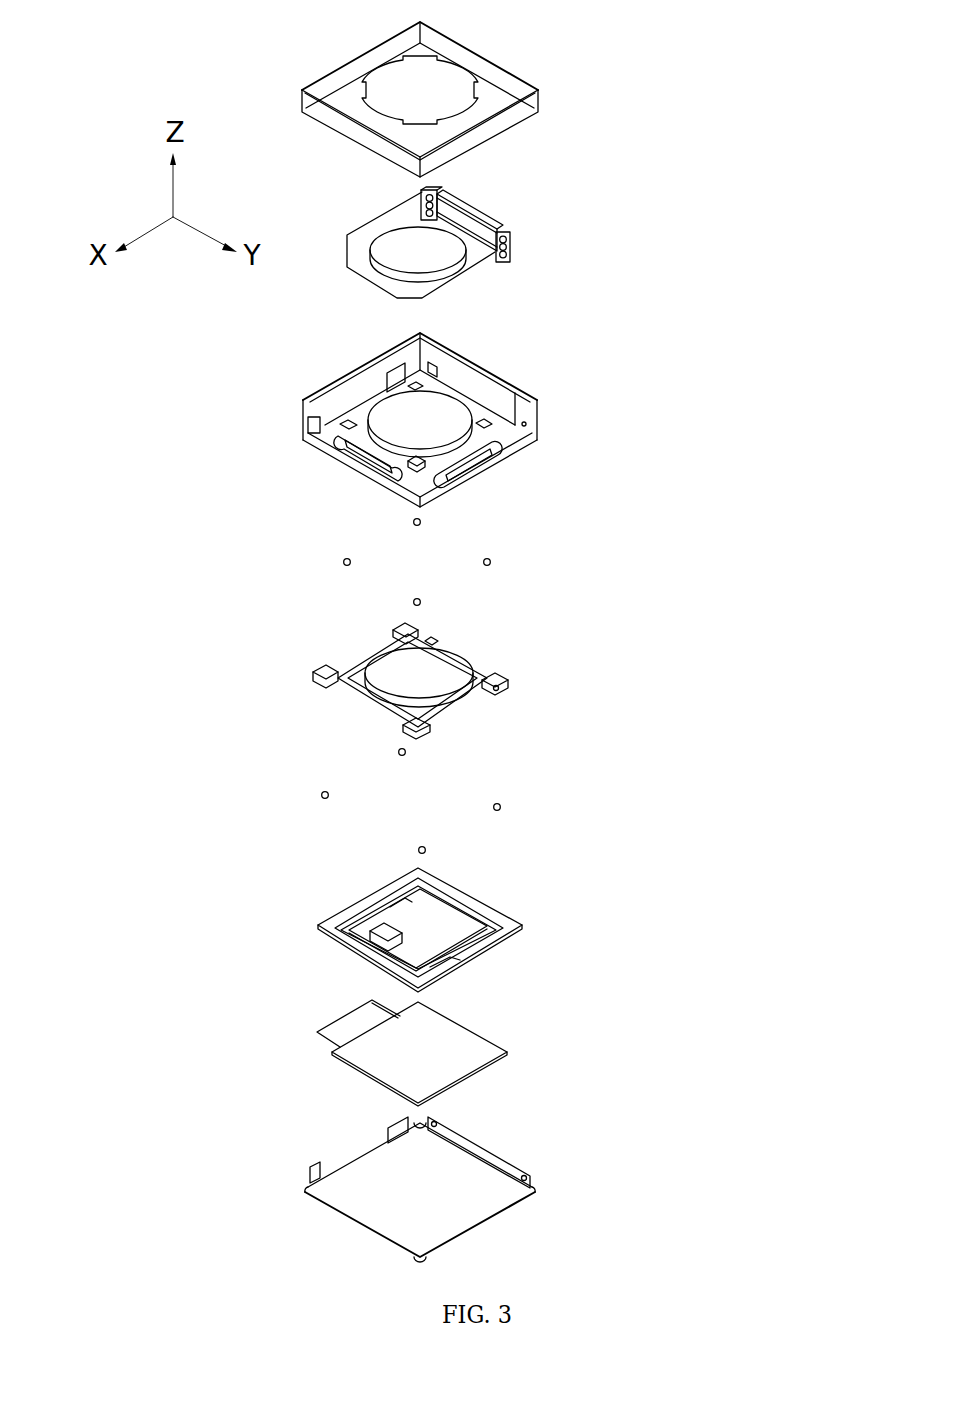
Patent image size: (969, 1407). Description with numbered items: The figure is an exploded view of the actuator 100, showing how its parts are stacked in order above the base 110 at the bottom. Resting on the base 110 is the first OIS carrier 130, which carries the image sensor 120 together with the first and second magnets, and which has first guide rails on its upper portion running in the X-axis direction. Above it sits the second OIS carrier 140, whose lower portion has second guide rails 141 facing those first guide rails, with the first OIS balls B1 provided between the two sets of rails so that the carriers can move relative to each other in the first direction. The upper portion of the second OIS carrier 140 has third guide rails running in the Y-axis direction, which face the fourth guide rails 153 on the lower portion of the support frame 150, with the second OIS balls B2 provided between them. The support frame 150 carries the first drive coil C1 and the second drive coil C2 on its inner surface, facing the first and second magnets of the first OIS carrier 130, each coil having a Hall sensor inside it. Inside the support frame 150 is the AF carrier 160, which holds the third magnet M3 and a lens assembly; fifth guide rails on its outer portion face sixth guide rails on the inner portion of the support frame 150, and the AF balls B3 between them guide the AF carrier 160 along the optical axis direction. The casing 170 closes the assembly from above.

The actuator 100 is at (286, 30).
The casing 170 is at (551, 95).
The AF carrier 160 is at (485, 232).
The third magnet M3 is at (477, 221).
The AF balls B3 is at (512, 244).
The support frame 150 is at (477, 446).
The first drive coil C1 is at (478, 472).
The second drive coil C2 is at (362, 472).
The fourth guide rails 153 is at (414, 469).
The second OIS balls B2 is at (421, 602).
The second OIS carrier 140 is at (471, 684).
The second guide rails 141 is at (500, 690).
The first OIS balls B1 is at (426, 850).
The first OIS carrier 130 is at (546, 927).
The image sensor 120 is at (522, 1050).
The base 110 is at (551, 1179).